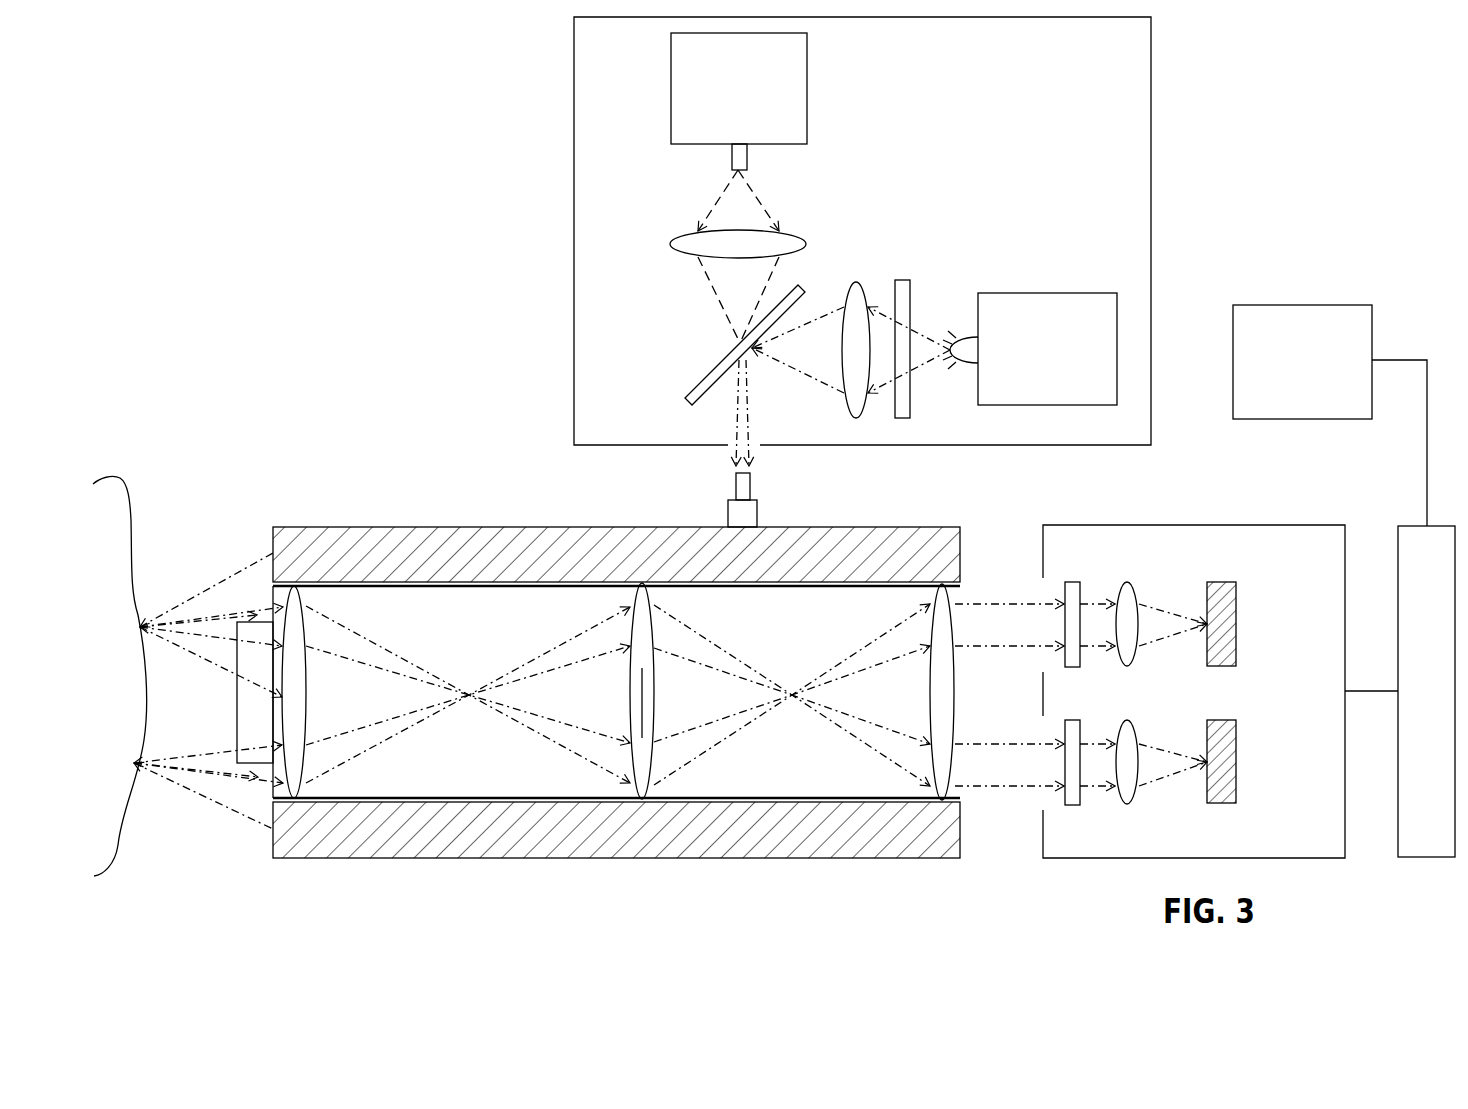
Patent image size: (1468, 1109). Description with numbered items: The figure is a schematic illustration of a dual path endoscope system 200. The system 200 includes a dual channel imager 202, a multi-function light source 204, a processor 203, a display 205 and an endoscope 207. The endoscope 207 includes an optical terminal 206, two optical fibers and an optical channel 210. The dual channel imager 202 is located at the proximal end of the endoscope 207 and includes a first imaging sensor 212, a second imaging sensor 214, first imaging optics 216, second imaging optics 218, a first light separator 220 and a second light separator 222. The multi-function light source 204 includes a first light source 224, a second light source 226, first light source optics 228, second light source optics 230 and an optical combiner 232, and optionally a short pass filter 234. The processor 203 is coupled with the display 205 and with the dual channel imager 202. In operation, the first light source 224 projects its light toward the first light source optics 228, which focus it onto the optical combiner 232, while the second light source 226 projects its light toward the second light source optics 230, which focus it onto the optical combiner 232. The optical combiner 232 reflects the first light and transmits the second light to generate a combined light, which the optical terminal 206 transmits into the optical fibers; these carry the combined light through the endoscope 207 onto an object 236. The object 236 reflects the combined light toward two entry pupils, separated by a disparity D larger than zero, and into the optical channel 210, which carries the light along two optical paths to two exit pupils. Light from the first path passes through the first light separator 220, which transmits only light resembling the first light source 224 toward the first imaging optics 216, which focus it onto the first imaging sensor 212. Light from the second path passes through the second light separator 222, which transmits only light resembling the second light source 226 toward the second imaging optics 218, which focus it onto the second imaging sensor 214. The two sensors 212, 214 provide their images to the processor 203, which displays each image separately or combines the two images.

The dual path endoscope system 200 is at (1261, 168).
The dual channel imager 202 is at (1236, 525).
The processor 203 is at (1417, 858).
The multi-function light source 204 is at (1152, 168).
The display 205 is at (1351, 305).
The optical terminal 206 is at (732, 489).
The endoscope 207 is at (616, 699).
The optical channel 210 is at (707, 707).
The first imaging sensor 212 is at (1238, 600).
The second imaging sensor 214 is at (1238, 737).
The first imaging optics 216 is at (1128, 582).
The second imaging optics 218 is at (1128, 804).
The first light separator 220 is at (1072, 668).
The second light separator 222 is at (1072, 806).
The first light source 224 is at (1100, 292).
The second light source 226 is at (808, 88).
The first light source optics 228 is at (852, 282).
The second light source optics 230 is at (671, 243).
The optical combiner 232 is at (692, 394).
The short pass filter 234 is at (907, 280).
The object 236 is at (117, 473).
The disparity D is at (237, 699).